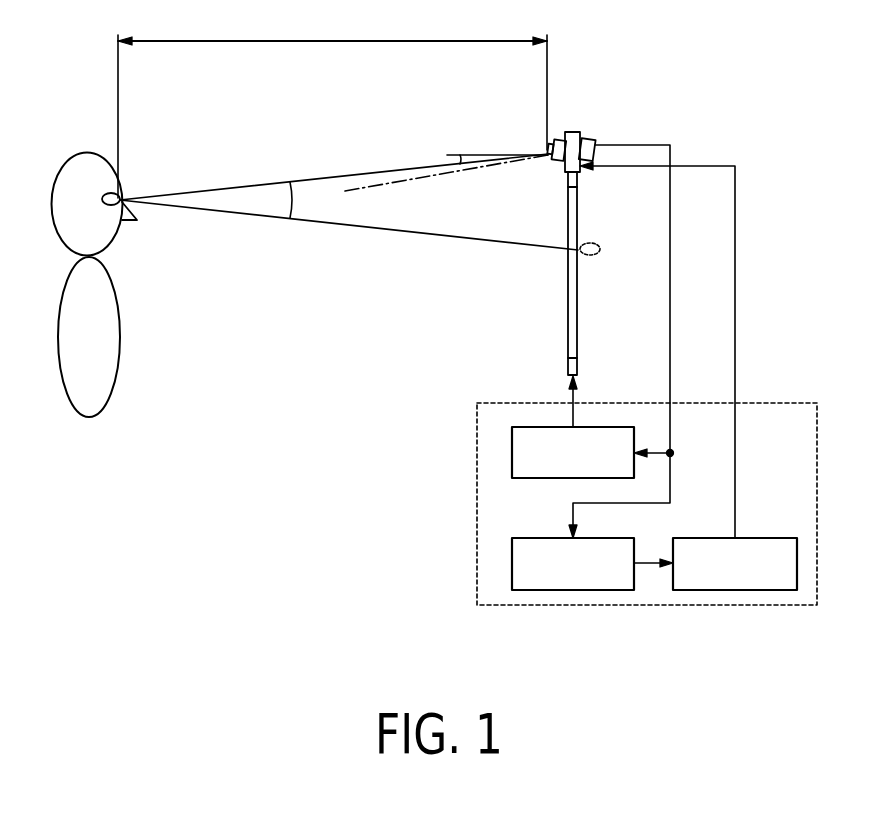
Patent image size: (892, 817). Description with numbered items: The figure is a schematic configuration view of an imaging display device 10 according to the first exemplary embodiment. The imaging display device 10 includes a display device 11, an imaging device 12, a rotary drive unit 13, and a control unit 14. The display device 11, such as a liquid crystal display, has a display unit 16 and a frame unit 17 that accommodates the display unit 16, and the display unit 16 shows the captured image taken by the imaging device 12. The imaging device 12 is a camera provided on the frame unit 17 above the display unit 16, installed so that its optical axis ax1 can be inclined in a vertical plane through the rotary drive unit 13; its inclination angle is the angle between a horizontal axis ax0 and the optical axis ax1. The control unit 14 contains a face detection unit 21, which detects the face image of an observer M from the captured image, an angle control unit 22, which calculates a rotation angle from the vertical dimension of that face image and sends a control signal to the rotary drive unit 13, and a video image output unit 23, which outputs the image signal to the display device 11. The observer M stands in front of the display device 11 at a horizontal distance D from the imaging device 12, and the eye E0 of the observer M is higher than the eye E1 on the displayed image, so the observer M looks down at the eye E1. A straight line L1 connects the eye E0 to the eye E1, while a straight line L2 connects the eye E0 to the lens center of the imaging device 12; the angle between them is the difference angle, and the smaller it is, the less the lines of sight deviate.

The imaging display device 10 is at (672, 108).
The display device 11 is at (556, 303).
The imaging device 12 is at (555, 145).
The rotary drive unit 13 is at (578, 134).
The control unit 14 is at (477, 545).
The display unit 16 is at (574, 310).
The frame unit 17 is at (576, 175).
The face detection unit 21 is at (594, 592).
The angle control unit 22 is at (766, 592).
The video image output unit 23 is at (512, 462).
The observer M is at (103, 153).
The eye of observer E0 is at (114, 194).
The eye on image E1 is at (598, 240).
The straight line connecting eye E0 and eye E1 L1 is at (347, 227).
The straight line connecting eye E0 and lens center L2 is at (357, 173).
The horizontal distance D is at (332, 102).
The horizontal axis ax0 is at (476, 155).
The optical axis ax1 is at (397, 183).